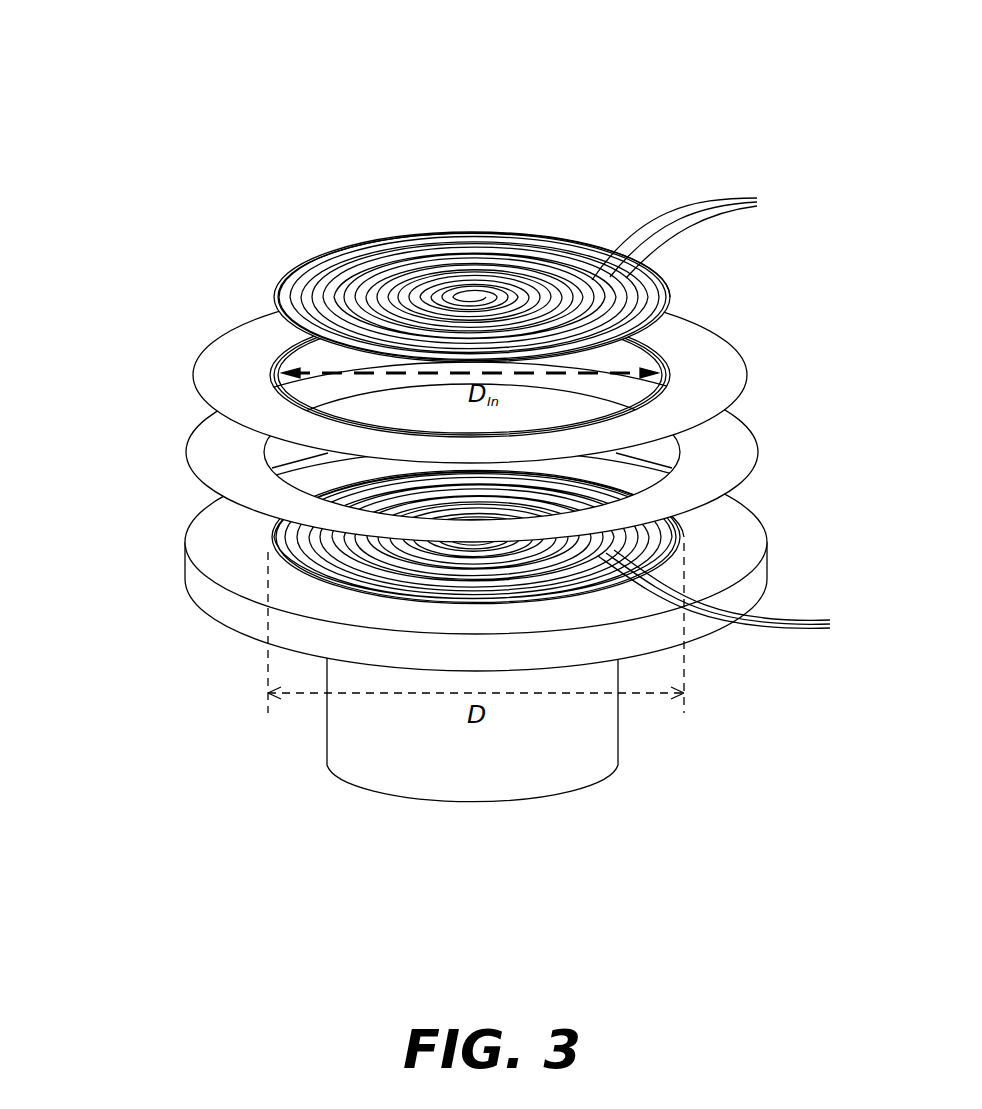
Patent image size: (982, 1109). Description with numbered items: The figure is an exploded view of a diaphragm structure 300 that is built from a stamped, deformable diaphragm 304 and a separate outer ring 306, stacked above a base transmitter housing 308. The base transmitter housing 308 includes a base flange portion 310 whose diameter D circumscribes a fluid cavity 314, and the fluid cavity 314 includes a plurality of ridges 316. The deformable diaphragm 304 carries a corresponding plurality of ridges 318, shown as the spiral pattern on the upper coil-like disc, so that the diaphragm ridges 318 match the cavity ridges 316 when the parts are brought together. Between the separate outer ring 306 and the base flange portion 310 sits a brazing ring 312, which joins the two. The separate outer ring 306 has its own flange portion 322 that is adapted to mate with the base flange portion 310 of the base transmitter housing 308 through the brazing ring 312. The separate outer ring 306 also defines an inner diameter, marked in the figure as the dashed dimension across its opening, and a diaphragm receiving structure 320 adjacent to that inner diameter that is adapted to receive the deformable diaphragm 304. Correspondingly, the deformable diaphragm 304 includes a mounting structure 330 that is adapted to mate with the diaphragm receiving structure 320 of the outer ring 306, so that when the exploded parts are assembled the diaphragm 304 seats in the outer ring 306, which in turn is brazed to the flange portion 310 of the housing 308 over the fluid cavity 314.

The diaphragm structure 300 is at (116, 55).
The stamped diaphragm 304 is at (512, 258).
The separate outer ring 306 is at (182, 352).
The base transmitter housing 308 is at (347, 738).
The base flange portion 310 is at (205, 548).
The brazing ring 312 is at (205, 440).
The fluid cavity 314 is at (680, 524).
The plurality of ridges 316 is at (744, 598).
The plurality of ridges 318 is at (705, 236).
The diaphragm receiving structure 320 is at (280, 352).
The flange portion 322 is at (225, 360).
The mounting structure 330 is at (340, 232).